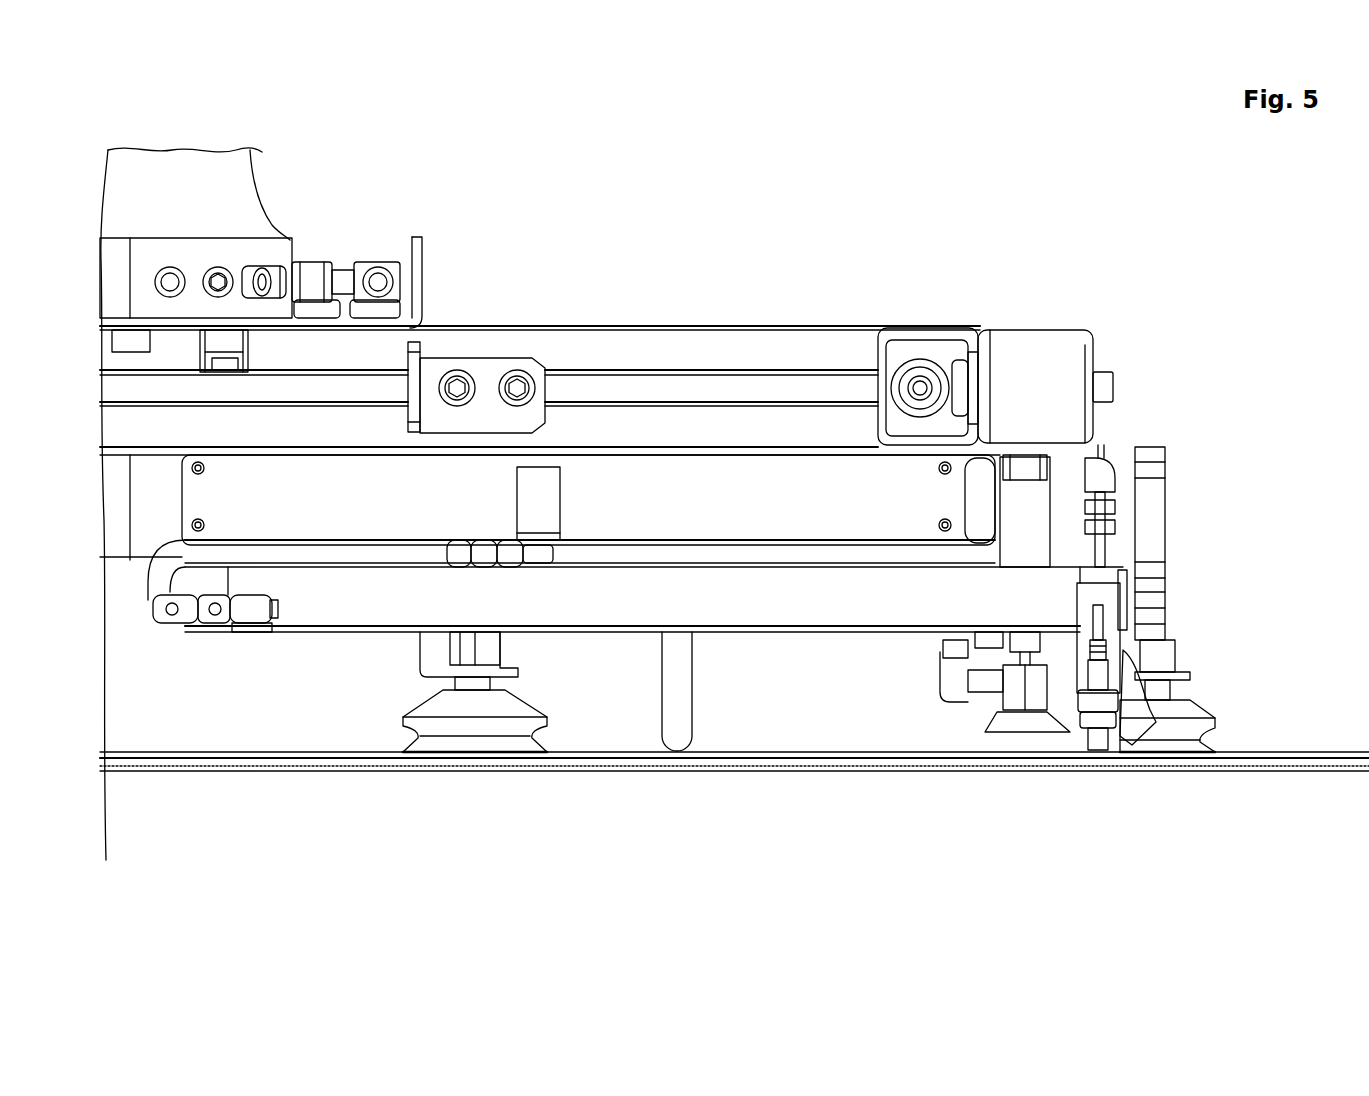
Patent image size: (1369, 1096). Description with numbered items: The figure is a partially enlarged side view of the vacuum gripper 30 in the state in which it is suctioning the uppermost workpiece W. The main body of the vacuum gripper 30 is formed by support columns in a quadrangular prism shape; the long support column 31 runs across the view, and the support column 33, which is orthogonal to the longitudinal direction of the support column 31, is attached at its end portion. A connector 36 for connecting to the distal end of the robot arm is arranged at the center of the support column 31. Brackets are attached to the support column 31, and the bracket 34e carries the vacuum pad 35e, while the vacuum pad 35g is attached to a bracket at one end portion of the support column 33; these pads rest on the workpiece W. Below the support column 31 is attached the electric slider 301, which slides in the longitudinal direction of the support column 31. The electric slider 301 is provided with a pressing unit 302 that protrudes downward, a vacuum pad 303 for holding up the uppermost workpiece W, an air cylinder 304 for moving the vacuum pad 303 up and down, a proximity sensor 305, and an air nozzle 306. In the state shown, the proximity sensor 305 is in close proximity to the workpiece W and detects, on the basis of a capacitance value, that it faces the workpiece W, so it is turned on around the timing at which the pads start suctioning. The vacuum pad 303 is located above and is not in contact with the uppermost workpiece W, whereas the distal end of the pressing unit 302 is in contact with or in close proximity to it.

The vacuum gripper 30 is at (778, 196).
The support column 31 is at (655, 326).
The support column 33 is at (1043, 328).
The connector 36 is at (284, 240).
The bracket 34e is at (420, 657).
The vacuum pad 35e is at (553, 682).
The vacuum pad 35g is at (1203, 704).
The electric slider 301 is at (627, 628).
The pressing unit 302 is at (673, 762).
The vacuum pad 303 is at (987, 714).
The air cylinder 304 is at (1050, 553).
The proximity sensor 305 is at (1100, 754).
The air nozzle 306 is at (1135, 742).
The workpiece W is at (1350, 752).